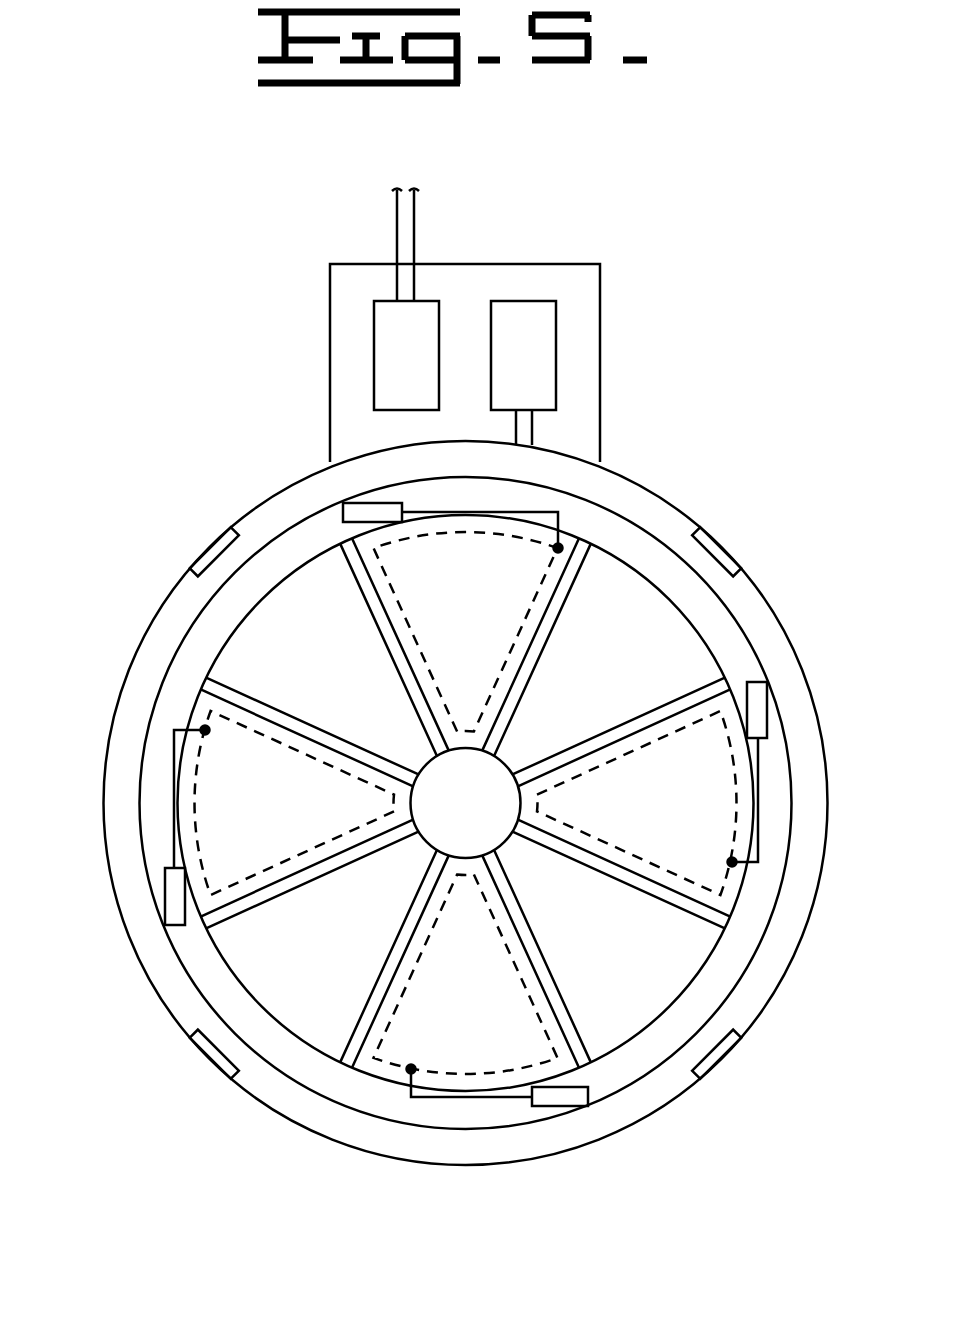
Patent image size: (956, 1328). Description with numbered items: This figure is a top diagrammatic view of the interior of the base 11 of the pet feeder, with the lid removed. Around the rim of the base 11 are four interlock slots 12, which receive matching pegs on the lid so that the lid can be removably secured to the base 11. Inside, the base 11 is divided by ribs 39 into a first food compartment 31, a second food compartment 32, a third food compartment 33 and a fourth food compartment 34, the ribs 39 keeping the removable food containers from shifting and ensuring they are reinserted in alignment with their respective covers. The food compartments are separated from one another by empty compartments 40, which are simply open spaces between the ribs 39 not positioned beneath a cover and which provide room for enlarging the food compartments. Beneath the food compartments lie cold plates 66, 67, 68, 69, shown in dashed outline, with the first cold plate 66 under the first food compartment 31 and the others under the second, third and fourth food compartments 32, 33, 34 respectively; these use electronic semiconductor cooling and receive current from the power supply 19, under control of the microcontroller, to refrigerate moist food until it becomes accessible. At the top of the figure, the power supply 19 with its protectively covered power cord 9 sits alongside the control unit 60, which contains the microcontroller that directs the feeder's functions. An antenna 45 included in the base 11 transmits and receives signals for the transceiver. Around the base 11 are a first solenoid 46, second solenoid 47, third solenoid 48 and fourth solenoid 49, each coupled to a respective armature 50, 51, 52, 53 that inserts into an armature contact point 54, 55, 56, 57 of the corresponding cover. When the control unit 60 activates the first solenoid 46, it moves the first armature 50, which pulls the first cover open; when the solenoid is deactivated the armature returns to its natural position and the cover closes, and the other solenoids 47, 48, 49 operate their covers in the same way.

The power cord 9 is at (397, 232).
The base 11 is at (98, 752).
The interlock slots 12 is at (205, 552).
The power supply 19 is at (374, 330).
The first food compartment 31 is at (333, 560).
The second food compartment 32 is at (200, 915).
The third food compartment 33 is at (567, 1062).
The fourth food compartment 34 is at (742, 680).
The ribs 39 is at (238, 687).
The empty compartments 40 is at (345, 676).
The antenna 45 is at (687, 567).
The first solenoid 46 is at (343, 512).
The second solenoid 47 is at (165, 893).
The third solenoid 48 is at (563, 1106).
The fourth solenoid 49 is at (767, 722).
The first armature 50 is at (558, 548).
The armature 51 is at (173, 752).
The armature 52 is at (427, 1098).
The armature 53 is at (758, 845).
The armature contact point 54 is at (600, 556).
The armature contact point 55 is at (205, 730).
The armature contact point 56 is at (411, 1072).
The armature contact point 57 is at (732, 862).
The control unit 60 is at (565, 343).
The first cold plate 66 is at (405, 625).
The cold plate 67 is at (197, 828).
The cold plate 68 is at (495, 1077).
The cold plate 69 is at (737, 798).